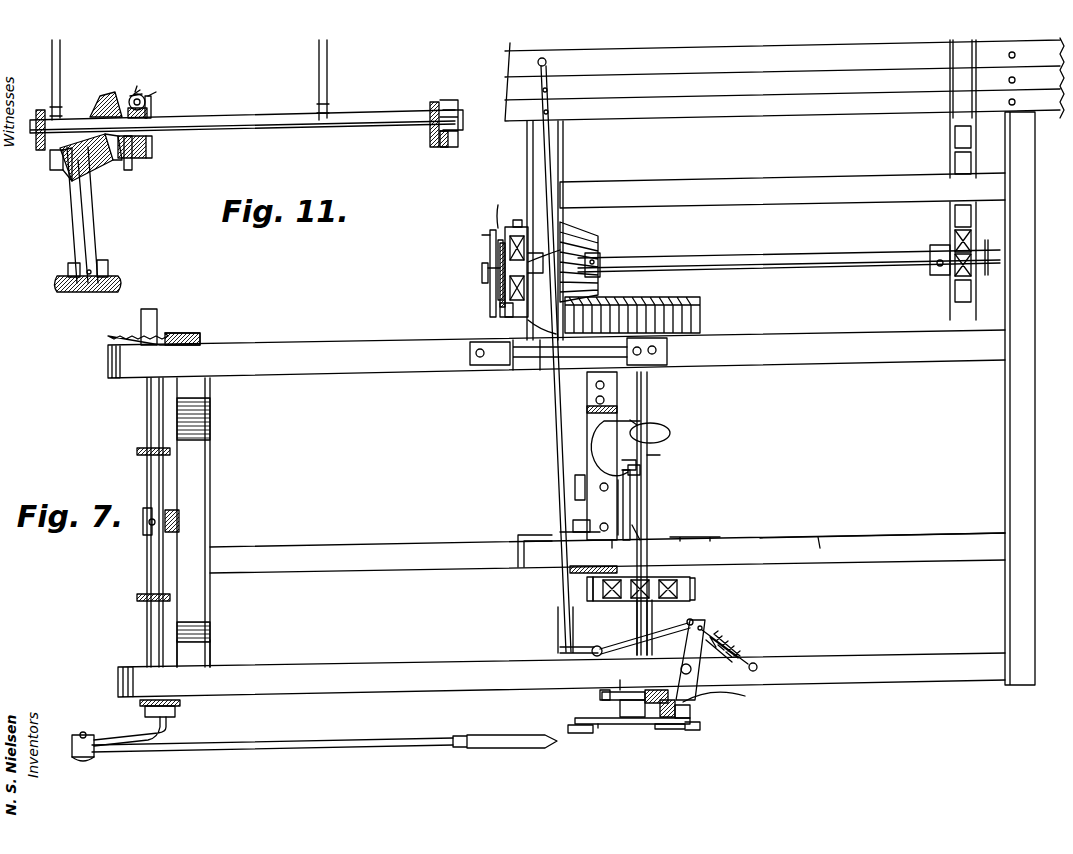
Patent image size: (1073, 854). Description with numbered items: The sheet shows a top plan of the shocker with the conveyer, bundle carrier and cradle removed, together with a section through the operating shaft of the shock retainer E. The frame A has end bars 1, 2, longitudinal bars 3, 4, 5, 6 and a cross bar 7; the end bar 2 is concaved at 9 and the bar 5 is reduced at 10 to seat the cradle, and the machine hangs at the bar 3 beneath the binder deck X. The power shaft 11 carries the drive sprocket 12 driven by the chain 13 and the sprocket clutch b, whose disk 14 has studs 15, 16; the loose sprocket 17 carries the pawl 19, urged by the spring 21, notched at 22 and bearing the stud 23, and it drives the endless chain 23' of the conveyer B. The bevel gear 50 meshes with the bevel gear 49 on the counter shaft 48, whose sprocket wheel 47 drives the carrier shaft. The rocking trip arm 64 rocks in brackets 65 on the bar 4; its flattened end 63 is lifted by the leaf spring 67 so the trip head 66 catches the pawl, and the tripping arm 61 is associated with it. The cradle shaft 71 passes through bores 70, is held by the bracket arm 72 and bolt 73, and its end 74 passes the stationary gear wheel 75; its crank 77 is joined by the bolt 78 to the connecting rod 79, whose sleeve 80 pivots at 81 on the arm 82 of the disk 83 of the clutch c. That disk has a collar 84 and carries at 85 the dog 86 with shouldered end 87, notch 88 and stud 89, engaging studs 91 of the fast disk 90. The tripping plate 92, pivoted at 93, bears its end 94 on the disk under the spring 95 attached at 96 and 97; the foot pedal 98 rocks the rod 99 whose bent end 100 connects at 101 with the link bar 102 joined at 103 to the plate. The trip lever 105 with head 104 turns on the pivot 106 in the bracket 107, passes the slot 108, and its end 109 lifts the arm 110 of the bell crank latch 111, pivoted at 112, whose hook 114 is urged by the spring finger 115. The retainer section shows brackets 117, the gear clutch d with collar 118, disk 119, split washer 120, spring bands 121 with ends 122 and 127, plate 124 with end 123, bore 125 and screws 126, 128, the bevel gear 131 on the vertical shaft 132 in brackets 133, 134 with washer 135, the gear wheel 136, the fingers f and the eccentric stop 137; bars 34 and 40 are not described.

In FIG. 7, the end bar 1 is at (1007, 421).
In FIG. 7, the end bar 2 is at (210, 652).
In FIG. 7, the longitudinal bar 3 is at (804, 196).
In FIG. 7, the longitudinal bar 4 is at (788, 338).
In FIG. 7, the longitudinal bar 5 is at (860, 546).
In FIG. 7, the longitudinal bar 6 is at (812, 665).
In FIG. 7, the cross bar 7 is at (590, 370).
In FIG. 7, the concaved portion 9 is at (193, 522).
In FIG. 7, the reduced section 10 is at (607, 553).
In FIG. 7, the power shaft 11 is at (740, 258).
In FIG. 7, the drive sprocket 12 is at (948, 272).
In FIG. 7, the chain 13 is at (950, 147).
In FIG. 7, the disk 14 is at (500, 285).
In FIG. 7, the stud 15 is at (492, 232).
In FIG. 7, the stud 16 is at (503, 310).
In FIG. 7, the sprocket 17 is at (514, 220).
In FIG. 7, the pawl 19 is at (498, 248).
In FIG. 7, the spring 21 is at (498, 206).
In FIG. 7, the notch 22 is at (528, 262).
In FIG. 7, the stud 23 is at (462, 268).
In FIG. 7, the endless chain 23' is at (495, 339).
In FIG. 7, the cross bar 34 is at (587, 410).
In FIG. 7, the bracket 40 is at (589, 588).
In FIG. 7, the sprocket wheel 47 is at (696, 586).
In FIG. 7, the counter shaft 48 is at (660, 460).
In FIG. 7, the bevel gear 49 is at (702, 305).
In FIG. 7, the bevel gear 50 is at (598, 240).
In FIG. 7, the tripping arm 61 is at (690, 538).
In FIG. 7, the flattened end 63 is at (672, 430).
In FIG. 7, the rocking trip arm 64 is at (538, 362).
In FIG. 7, the bracket 65 is at (512, 364).
In FIG. 7, the trip head 66 is at (488, 272).
In FIG. 7, the leaf spring 67 is at (648, 400).
In FIG. 7, the bore 70 is at (140, 455).
In FIG. 7, the cradle shaft 71 is at (147, 415).
In FIG. 7, the bracket arm 72 is at (143, 525).
In FIG. 7, the bolt 73 is at (152, 526).
In FIG. 7, the shaft end 74 is at (158, 312).
In FIG. 7, the gear wheel 75 is at (184, 332).
In FIG. 7, the crank 77 is at (108, 735).
In FIG. 7, the bolt 78 is at (80, 758).
In FIG. 7, the connecting rod 79 is at (310, 748).
In FIG. 7, the sleeve 80 is at (508, 750).
In FIG. 7, the pivot 81 is at (592, 734).
In FIG. 7, the arm 82 is at (645, 725).
In FIG. 7, the disk 83 is at (665, 718).
In FIG. 7, the collar 84 is at (602, 705).
In FIG. 7, the pivot 85 is at (685, 730).
In FIG. 7, the dog 86 is at (626, 725).
In FIG. 7, the shouldered end 87 is at (608, 734).
In FIG. 7, the notch 88 is at (690, 712).
In FIG. 7, the stud 89 is at (702, 728).
In FIG. 7, the disk 90 is at (650, 690).
In FIG. 7, the stud 91 is at (600, 697).
In FIG. 7, the tripping plate 92 is at (698, 668).
In FIG. 7, the pivot 93 is at (673, 670).
In FIG. 7, the end 94 is at (723, 695).
In FIG. 7, the spring 95 is at (744, 655).
In FIG. 7, the connection 96 is at (704, 624).
In FIG. 7, the stud 97 is at (758, 667).
In FIG. 7, the foot pedal 98 is at (548, 66).
In FIG. 7, the rocking rod 99 is at (548, 148).
In FIG. 7, the bent end 100 is at (581, 631).
In FIG. 7, the connection 101 is at (630, 645).
In FIG. 7, the link bar 102 is at (654, 635).
In FIG. 7, the connection 103 is at (693, 618).
In FIG. 7, the head 104 is at (518, 557).
In FIG. 7, the trip lever 105 is at (560, 530).
In FIG. 7, the pivot 106 is at (576, 520).
In FIG. 7, the bracket 107 is at (575, 485).
In FIG. 7, the slot 108 is at (614, 545).
In FIG. 7, the end 109 is at (642, 526).
In FIG. 11, the horizontal arm 110 is at (246, 118).
In FIG. 7, the horizontal arm 110 is at (632, 508).
In FIG. 7, the bell crank latch 111 is at (619, 495).
In FIG. 7, the pivot 112 is at (642, 470).
In FIG. 7, the hook 114 is at (624, 466).
In FIG. 7, the spring finger 115 is at (596, 438).
In FIG. 11, the bracket 117 is at (72, 86).
In FIG. 11, the collar 118 is at (108, 96).
In FIG. 11, the disk 119 is at (150, 112).
In FIG. 11, the split washer 120 is at (139, 94).
In FIG. 11, the spring band 121 is at (146, 95).
In FIG. 11, the parallel ends 122 is at (148, 150).
In FIG. 11, the end 123 is at (133, 165).
In FIG. 11, the connecting plate 124 is at (121, 165).
In FIG. 11, the threaded bore 125 is at (154, 150).
In FIG. 11, the screw 126 is at (108, 165).
In FIG. 11, the parallel ends 127 is at (142, 92).
In FIG. 11, the screw 128 is at (140, 90).
In FIG. 11, the bevel gear 131 is at (56, 172).
In FIG. 11, the vertical shaft 132 is at (83, 238).
In FIG. 11, the upper bracket 133 is at (72, 182).
In FIG. 11, the lower bracket 134 is at (104, 262).
In FIG. 11, the washer 135 is at (93, 190).
In FIG. 11, the gear wheel 136 is at (66, 294).
In FIG. 11, the eccentric stop 137 is at (444, 146).
In FIG. 7, the frame A is at (819, 531).
In FIG. 7, the conveyer B is at (527, 158).
In FIG. 11, the shock retainer E is at (361, 106).
In FIG. 7, the deck X is at (756, 105).
In FIG. 7, the sprocket clutch b is at (482, 233).
In FIG. 7, the clutch c is at (626, 676).
In FIG. 11, the gear clutch d is at (157, 88).
In FIG. 11, the retaining fingers f is at (60, 66).